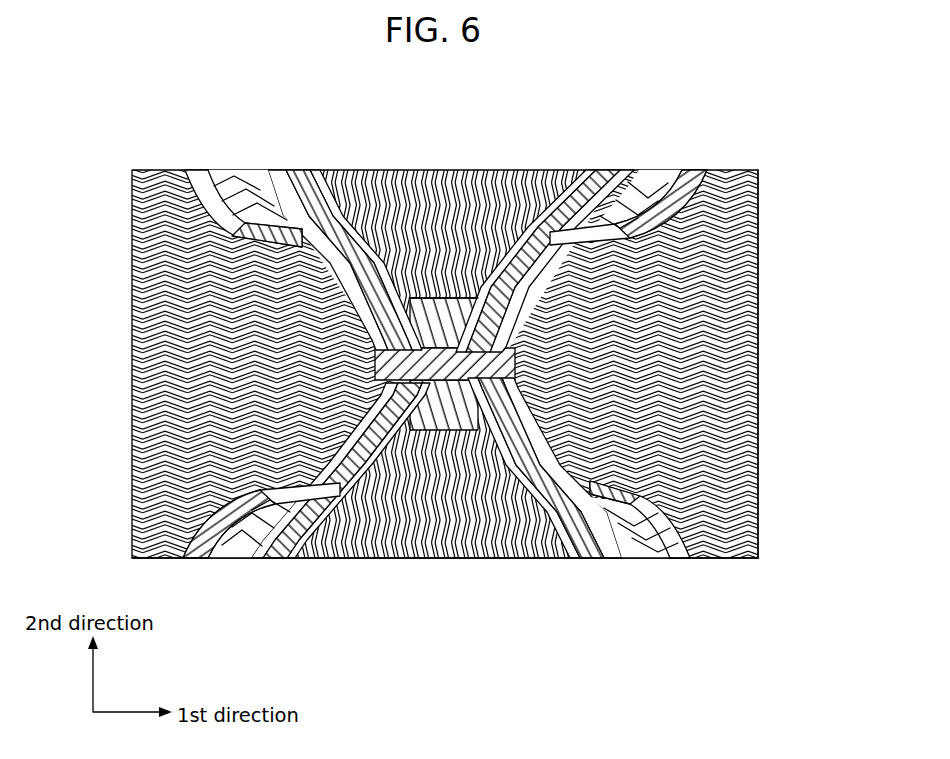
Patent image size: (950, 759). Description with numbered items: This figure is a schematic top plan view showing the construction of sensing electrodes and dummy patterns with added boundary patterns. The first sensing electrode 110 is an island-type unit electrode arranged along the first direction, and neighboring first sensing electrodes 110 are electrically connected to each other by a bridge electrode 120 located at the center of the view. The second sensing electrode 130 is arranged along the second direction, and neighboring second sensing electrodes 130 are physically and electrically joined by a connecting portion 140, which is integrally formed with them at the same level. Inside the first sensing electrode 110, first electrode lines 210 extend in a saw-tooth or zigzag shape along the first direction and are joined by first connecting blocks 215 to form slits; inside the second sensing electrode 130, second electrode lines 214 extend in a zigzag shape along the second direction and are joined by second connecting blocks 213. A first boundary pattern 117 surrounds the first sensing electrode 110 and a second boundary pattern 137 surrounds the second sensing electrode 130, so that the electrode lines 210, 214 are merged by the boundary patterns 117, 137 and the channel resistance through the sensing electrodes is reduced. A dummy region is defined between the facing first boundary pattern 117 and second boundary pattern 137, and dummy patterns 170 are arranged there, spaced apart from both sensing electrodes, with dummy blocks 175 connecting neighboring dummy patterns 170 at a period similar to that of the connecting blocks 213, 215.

The first sensing electrode 110 is at (128, 170).
The first boundary pattern 117 is at (758, 478).
The bridge electrode 120 is at (389, 556).
The second sensing electrode 130 is at (605, 165).
The second boundary pattern 137 is at (283, 556).
The connecting portion 140 is at (478, 299).
The dummy pattern 170 is at (262, 556).
The dummy block 175 is at (211, 557).
The first electrode line 210 is at (743, 556).
The second connecting block 213 is at (452, 556).
The second electrode line 214 is at (518, 556).
The first connecting block 215 is at (758, 519).